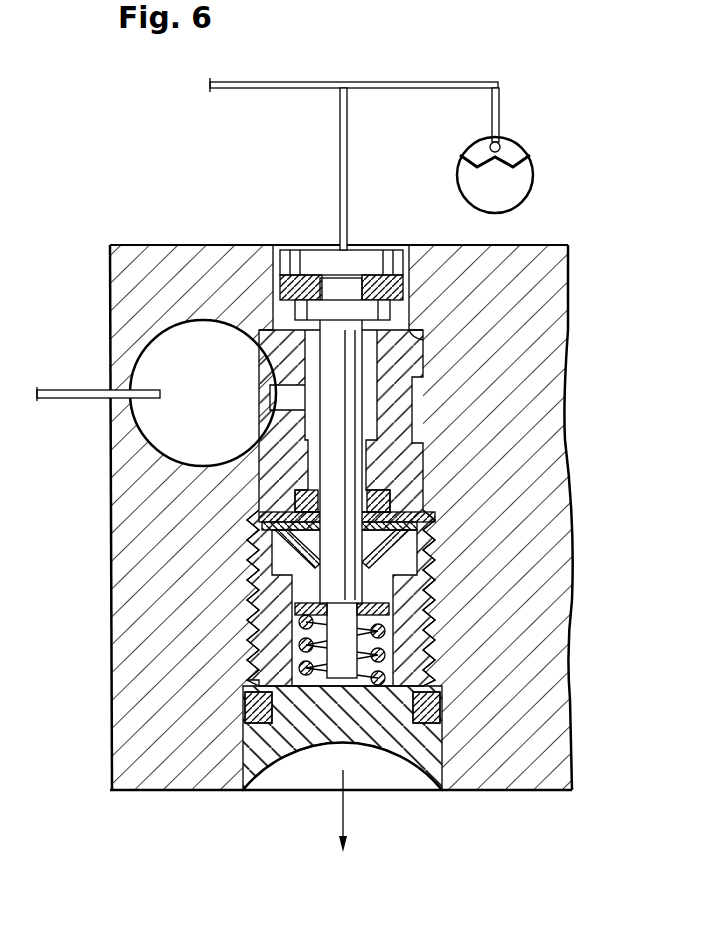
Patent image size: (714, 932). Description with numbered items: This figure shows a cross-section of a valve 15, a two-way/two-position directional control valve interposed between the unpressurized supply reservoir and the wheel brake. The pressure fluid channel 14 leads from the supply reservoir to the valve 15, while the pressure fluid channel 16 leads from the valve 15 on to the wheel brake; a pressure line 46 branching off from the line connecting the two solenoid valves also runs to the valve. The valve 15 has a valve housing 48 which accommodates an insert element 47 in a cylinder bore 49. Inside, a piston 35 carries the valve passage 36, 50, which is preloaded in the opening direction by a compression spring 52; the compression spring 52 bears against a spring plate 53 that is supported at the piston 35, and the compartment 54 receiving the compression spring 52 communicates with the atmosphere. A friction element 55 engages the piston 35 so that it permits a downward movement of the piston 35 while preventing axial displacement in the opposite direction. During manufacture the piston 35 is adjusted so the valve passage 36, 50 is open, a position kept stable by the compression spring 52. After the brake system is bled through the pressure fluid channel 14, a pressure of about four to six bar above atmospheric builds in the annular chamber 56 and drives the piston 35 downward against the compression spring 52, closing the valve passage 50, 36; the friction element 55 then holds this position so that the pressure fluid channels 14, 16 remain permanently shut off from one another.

The pressure fluid channel 14 is at (64, 388).
The valve 15 is at (104, 225).
The pressure fluid channel 16 is at (412, 90).
The piston 35 is at (330, 470).
The valve passage 36 is at (330, 262).
The pressure line 46 is at (262, 90).
The insert element 47 is at (293, 725).
The valve housing 48 is at (140, 640).
The cylinder bore 49 is at (250, 582).
The valve passage 50 is at (423, 340).
The compression spring 52 is at (387, 660).
The spring plate 53 is at (385, 625).
The compartment 54 is at (385, 588).
The friction element 55 is at (410, 538).
The annular chamber 56 is at (410, 395).